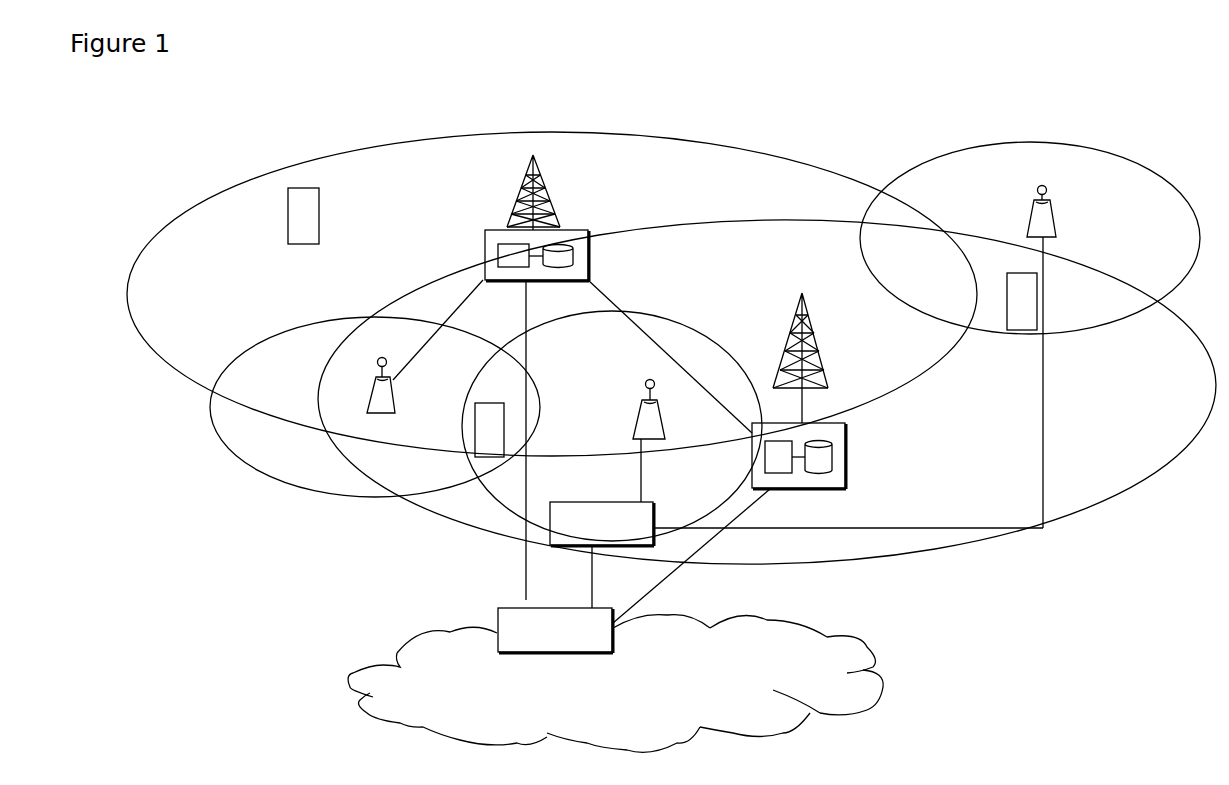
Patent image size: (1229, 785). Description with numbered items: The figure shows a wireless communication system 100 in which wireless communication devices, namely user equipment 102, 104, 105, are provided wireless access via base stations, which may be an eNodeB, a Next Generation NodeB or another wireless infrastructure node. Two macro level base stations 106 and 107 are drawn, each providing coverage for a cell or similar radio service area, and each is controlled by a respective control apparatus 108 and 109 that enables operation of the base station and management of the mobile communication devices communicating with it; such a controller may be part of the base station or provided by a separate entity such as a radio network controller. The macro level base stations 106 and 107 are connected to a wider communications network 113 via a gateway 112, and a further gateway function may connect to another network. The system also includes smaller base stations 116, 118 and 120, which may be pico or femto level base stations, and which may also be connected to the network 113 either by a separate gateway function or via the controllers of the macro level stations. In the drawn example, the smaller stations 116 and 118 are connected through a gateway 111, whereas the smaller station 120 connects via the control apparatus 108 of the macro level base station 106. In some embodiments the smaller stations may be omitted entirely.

The wireless communication system 100 is at (218, 182).
The user equipment 102 is at (288, 227).
The user equipment 104 is at (477, 433).
The user equipment 105 is at (1020, 330).
The macro level base station 106 is at (520, 200).
The macro level base station 107 is at (822, 358).
The control apparatus 108 is at (485, 245).
The control apparatus 109 is at (837, 480).
The gateway 111 is at (557, 528).
The gateway 112 is at (498, 608).
The wider communications network 113 is at (427, 662).
The smaller base station 116 is at (1028, 215).
The smaller base station 118 is at (650, 425).
The smaller base station 120 is at (370, 391).